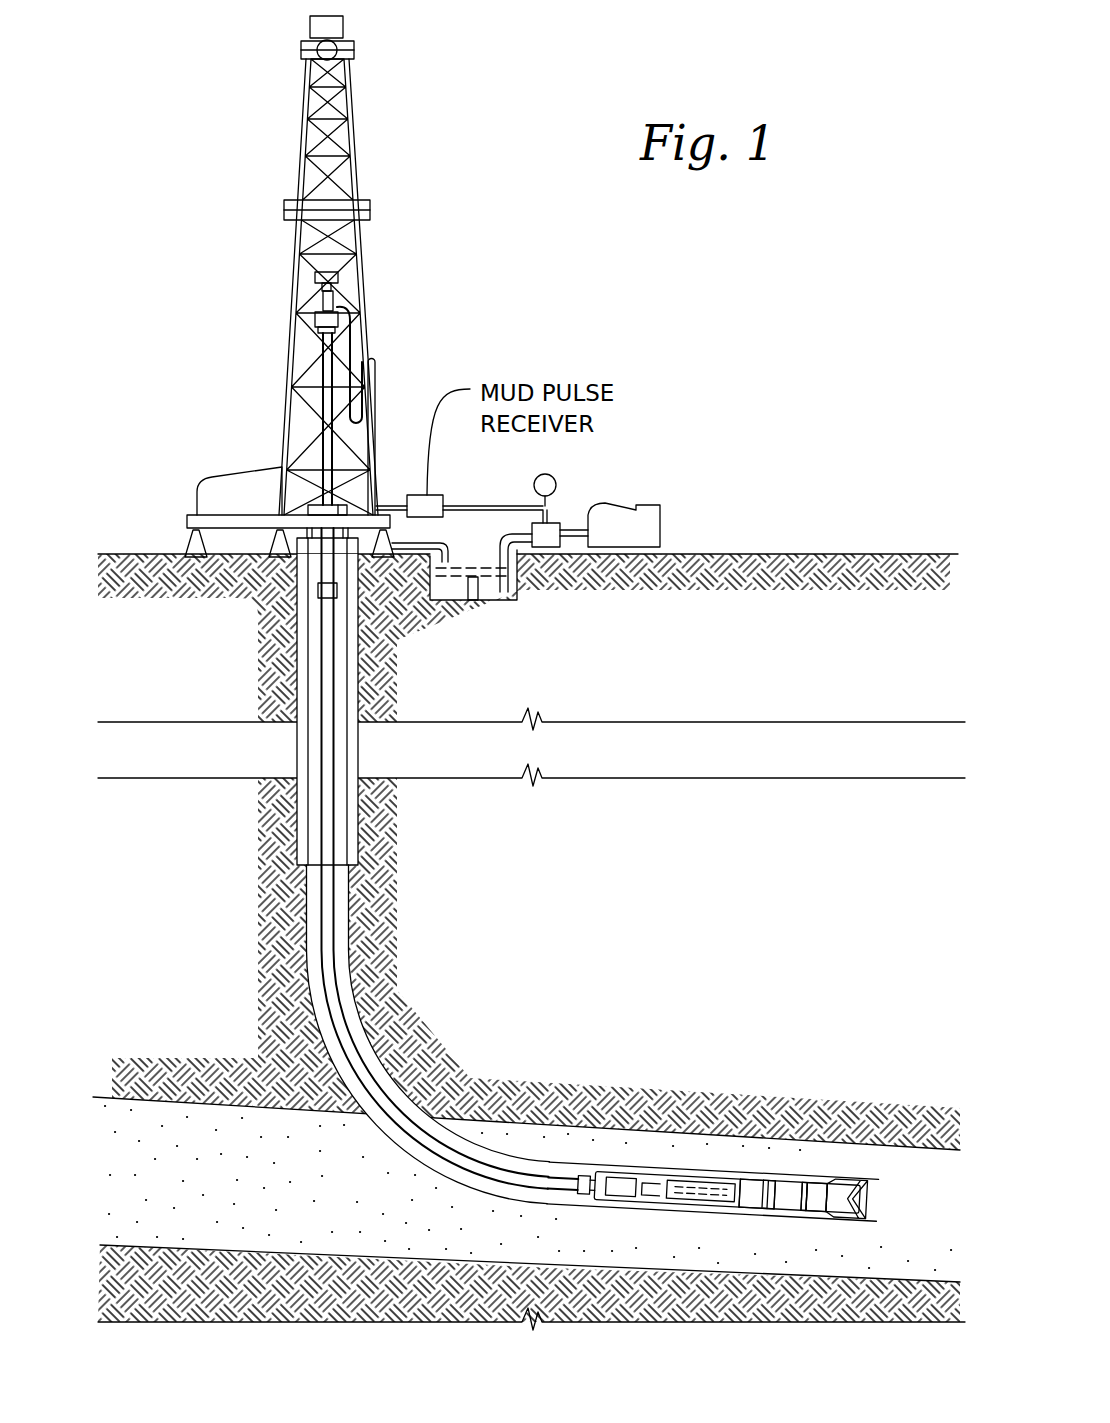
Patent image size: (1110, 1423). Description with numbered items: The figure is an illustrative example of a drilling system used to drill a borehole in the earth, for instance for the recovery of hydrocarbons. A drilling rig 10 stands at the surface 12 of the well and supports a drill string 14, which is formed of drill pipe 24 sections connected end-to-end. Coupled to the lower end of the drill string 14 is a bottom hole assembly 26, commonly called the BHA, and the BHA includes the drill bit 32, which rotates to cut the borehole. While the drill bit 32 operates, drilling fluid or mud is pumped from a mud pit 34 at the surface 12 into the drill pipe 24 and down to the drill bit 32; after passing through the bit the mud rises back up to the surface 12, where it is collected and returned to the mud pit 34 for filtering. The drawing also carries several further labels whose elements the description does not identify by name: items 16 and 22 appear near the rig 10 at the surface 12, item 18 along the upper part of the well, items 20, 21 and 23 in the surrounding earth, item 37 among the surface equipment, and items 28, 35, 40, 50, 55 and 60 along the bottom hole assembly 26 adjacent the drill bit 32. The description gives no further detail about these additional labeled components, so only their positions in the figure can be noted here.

The drilling rig 10 is at (405, 343).
The surface 12 is at (720, 550).
The drill string 14 is at (365, 1045).
The wellhead / rotary table 16 is at (308, 508).
The casing 18 is at (345, 913).
The overburden formation 20 is at (697, 943).
The target formation 21 is at (370, 1197).
The kelly / drill string upper section 22 is at (320, 448).
The formation boundary 23 is at (911, 1152).
The drill pipe 24 is at (397, 1097).
The bottom hole assembly 26 is at (867, 1211).
The stabilizer / drill collar 28 is at (582, 1176).
The drill bit 32 is at (852, 1182).
The mud pit 34 is at (447, 602).
The sensor module 35 is at (647, 1183).
The mud line 37 is at (482, 507).
The steering / motor section 40 is at (813, 1186).
The MWD tool 50 is at (729, 1162).
The telemetry electronics 55 is at (692, 1186).
The sensor sub 60 is at (602, 1174).